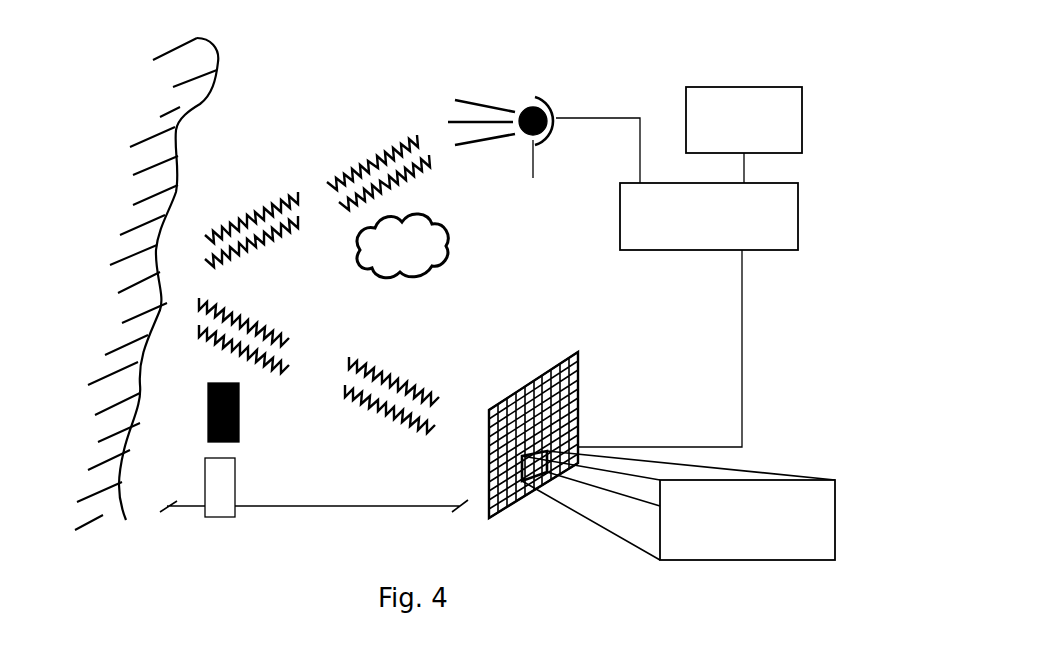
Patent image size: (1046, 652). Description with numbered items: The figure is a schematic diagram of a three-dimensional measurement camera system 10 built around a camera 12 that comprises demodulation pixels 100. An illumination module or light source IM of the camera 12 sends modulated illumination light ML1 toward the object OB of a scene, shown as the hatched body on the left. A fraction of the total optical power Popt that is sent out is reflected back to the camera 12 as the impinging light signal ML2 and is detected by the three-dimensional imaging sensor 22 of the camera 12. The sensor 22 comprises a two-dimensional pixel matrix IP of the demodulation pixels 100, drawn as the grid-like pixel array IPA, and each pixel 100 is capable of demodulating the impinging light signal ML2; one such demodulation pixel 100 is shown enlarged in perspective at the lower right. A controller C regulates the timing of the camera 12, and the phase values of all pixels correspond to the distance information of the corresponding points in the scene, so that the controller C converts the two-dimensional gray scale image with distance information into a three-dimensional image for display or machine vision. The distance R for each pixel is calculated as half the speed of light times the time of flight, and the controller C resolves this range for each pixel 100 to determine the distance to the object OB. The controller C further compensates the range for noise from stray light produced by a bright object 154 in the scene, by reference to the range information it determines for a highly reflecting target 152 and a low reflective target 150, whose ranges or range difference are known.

The scene / field of view 10 is at (440, 313).
The camera 12 is at (750, 70).
The 3D imaging sensor 22 is at (578, 352).
The demodulation pixel 100 is at (770, 563).
The low reflective target 150 is at (240, 415).
The highly reflecting target 152 is at (206, 502).
The bright object 154 is at (443, 262).
The illumination module IM is at (525, 103).
The object OB is at (177, 168).
The modulated illumination light ML1 is at (385, 145).
The impinging light signal ML2 is at (398, 373).
The pixel matrix IP is at (525, 490).
The image pixel array IPA is at (489, 527).
The distance R is at (314, 518).
The optical power Popt is at (411, 450).
The controller C is at (709, 216).